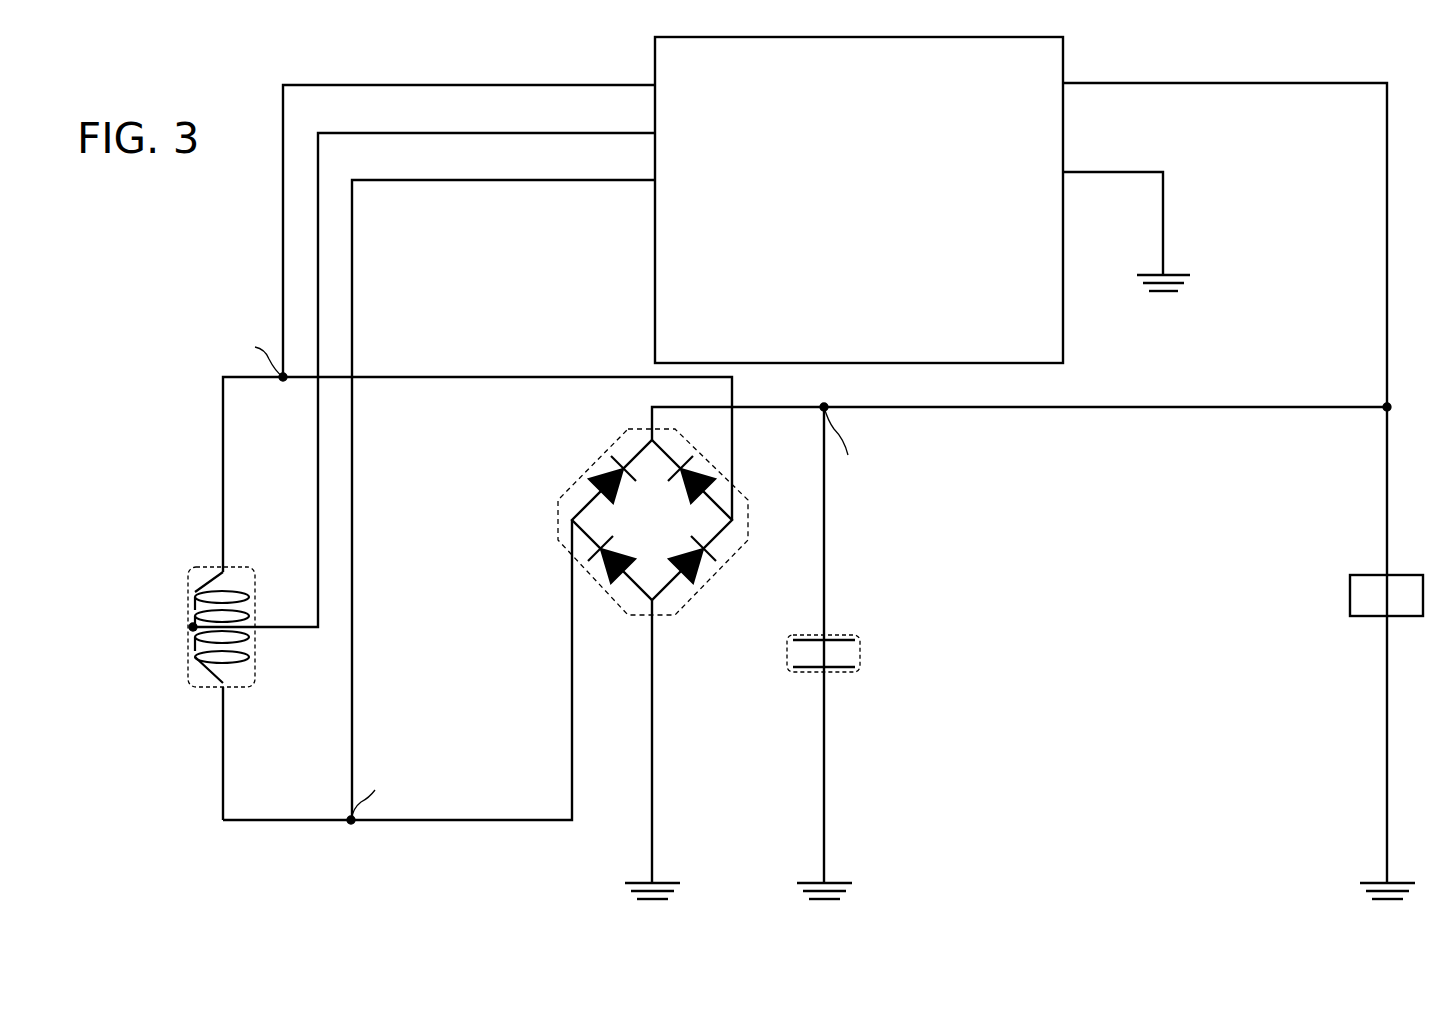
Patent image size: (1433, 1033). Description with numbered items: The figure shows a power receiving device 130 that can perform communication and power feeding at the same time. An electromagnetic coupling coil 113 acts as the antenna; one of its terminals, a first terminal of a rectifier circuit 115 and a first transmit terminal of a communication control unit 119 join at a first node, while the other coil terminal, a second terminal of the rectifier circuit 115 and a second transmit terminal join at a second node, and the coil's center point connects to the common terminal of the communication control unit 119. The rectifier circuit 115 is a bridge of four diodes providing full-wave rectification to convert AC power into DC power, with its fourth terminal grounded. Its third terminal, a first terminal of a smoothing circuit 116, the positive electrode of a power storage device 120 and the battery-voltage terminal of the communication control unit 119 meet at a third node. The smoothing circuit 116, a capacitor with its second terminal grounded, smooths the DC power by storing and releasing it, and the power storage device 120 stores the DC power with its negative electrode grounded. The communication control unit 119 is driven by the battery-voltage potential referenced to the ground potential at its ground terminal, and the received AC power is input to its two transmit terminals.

The power receiving device 130 is at (222, 46).
The communication control unit 119 is at (1066, 45).
The electromagnetic coupling coil 113 is at (233, 570).
The rectifier circuit 115 is at (590, 587).
The smoothing circuit 116 is at (794, 637).
The power storage device 120 is at (1350, 596).